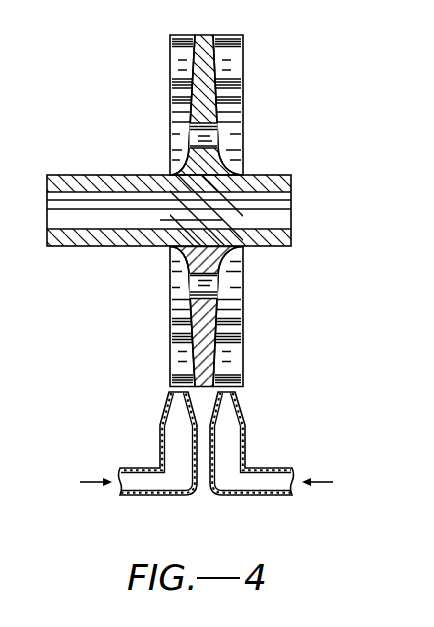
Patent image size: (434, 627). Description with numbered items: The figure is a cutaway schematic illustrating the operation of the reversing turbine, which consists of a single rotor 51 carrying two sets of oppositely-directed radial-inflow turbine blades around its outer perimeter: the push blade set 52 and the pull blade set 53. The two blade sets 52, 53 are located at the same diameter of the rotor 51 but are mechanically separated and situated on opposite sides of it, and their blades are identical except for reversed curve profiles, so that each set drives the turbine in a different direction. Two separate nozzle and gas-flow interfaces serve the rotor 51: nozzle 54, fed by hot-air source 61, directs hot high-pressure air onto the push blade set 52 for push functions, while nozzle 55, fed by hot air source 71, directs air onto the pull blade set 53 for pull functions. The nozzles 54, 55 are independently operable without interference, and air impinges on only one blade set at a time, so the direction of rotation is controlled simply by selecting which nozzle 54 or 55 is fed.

The rotor 51 is at (222, 153).
The push blade set 52 is at (244, 63).
The pull blade set 53 is at (170, 62).
The nozzle 54 is at (232, 493).
The nozzle 55 is at (170, 493).
The hot-air source 61 is at (336, 482).
The hot air source 71 is at (78, 482).